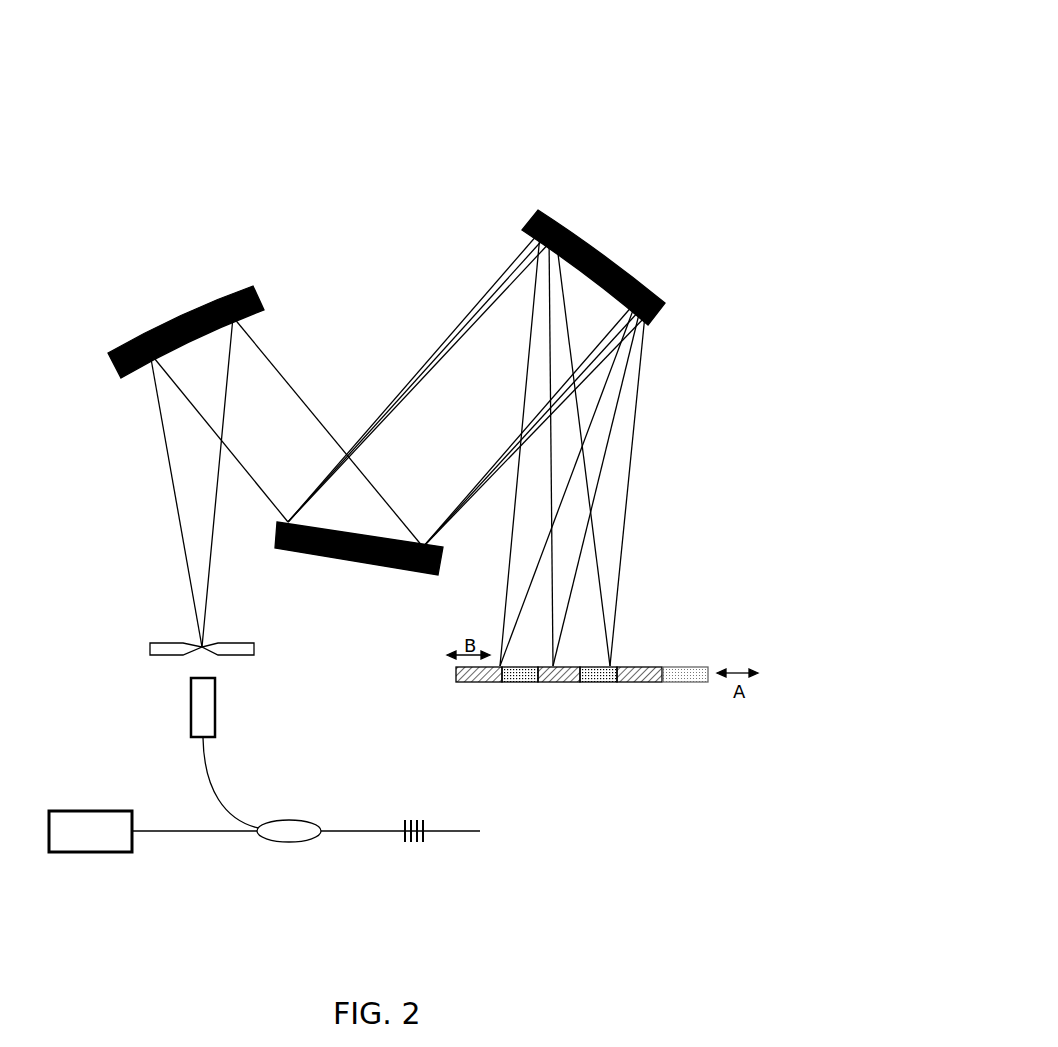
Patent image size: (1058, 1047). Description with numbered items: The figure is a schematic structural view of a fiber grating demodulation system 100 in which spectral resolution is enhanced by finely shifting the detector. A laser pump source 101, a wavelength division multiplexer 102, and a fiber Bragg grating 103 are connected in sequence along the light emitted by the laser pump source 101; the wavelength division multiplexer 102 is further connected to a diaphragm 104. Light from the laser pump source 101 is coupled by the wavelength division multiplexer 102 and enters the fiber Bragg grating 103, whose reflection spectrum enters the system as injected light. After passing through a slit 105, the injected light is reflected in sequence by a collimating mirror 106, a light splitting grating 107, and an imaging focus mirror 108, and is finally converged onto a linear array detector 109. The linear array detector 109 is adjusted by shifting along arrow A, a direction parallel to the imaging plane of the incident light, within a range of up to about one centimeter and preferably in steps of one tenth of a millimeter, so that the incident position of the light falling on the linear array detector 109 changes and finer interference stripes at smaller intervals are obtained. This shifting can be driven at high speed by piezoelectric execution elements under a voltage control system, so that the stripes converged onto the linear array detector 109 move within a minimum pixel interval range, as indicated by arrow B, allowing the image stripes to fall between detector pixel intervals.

The fiber grating demodulation system 100 is at (582, 116).
The laser pump source 101 is at (85, 852).
The wavelength division multiplexer 102 is at (277, 843).
The fiber Bragg grating 103 is at (410, 843).
The diaphragm 104 is at (192, 712).
The slit 105 is at (162, 642).
The collimating mirror 106 is at (157, 330).
The light splitting grating 107 is at (390, 572).
The imaging focus mirror 108 is at (662, 316).
The linear array detector 109 is at (540, 685).